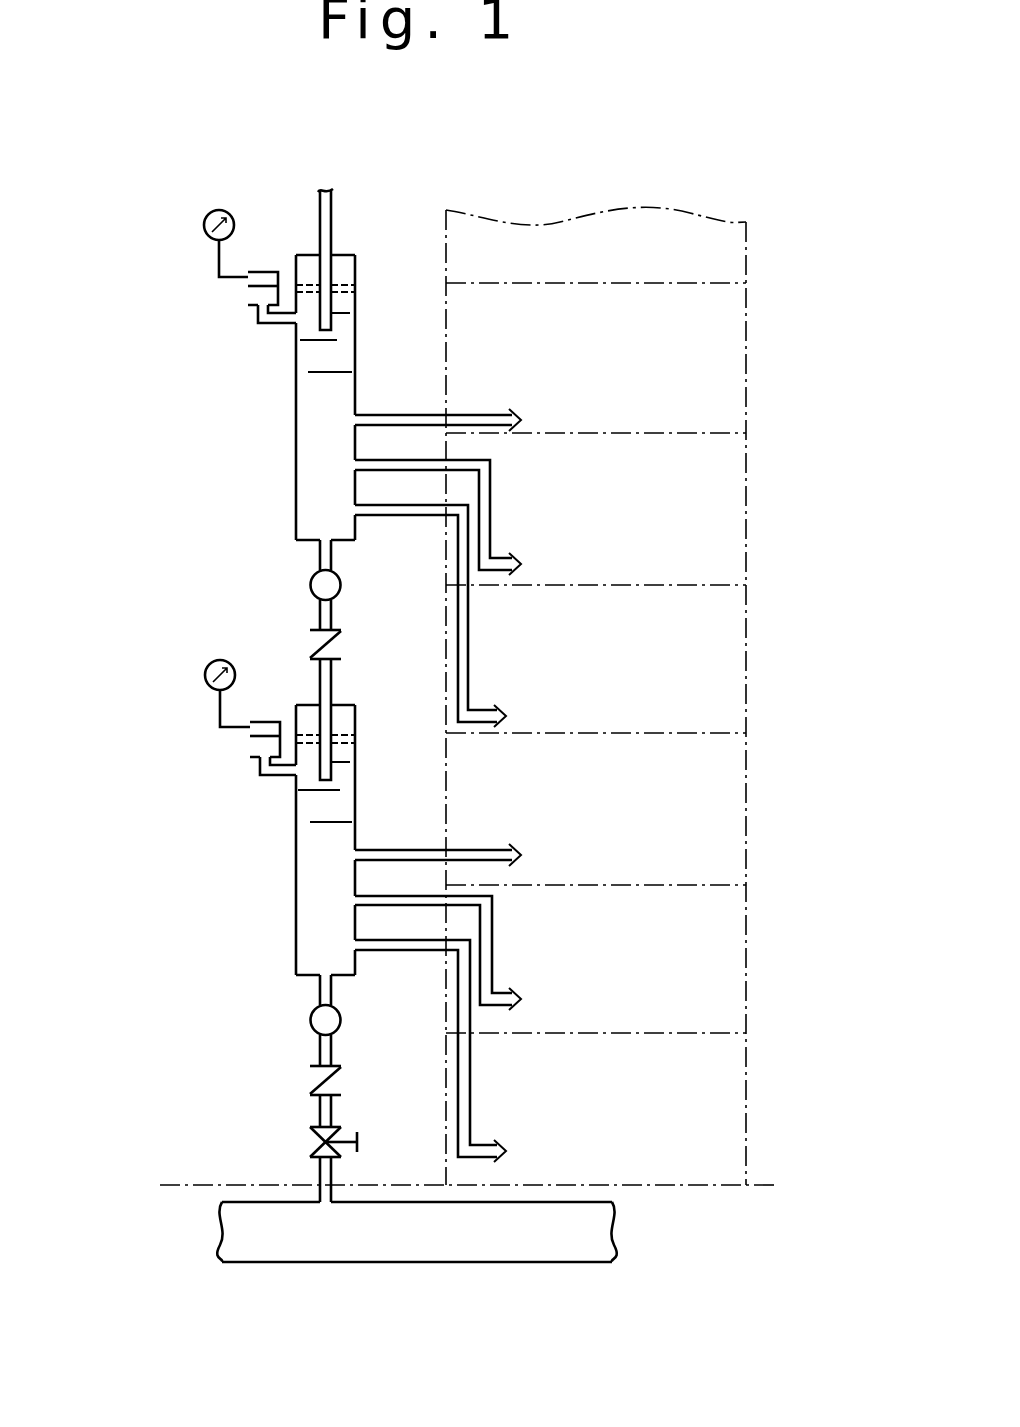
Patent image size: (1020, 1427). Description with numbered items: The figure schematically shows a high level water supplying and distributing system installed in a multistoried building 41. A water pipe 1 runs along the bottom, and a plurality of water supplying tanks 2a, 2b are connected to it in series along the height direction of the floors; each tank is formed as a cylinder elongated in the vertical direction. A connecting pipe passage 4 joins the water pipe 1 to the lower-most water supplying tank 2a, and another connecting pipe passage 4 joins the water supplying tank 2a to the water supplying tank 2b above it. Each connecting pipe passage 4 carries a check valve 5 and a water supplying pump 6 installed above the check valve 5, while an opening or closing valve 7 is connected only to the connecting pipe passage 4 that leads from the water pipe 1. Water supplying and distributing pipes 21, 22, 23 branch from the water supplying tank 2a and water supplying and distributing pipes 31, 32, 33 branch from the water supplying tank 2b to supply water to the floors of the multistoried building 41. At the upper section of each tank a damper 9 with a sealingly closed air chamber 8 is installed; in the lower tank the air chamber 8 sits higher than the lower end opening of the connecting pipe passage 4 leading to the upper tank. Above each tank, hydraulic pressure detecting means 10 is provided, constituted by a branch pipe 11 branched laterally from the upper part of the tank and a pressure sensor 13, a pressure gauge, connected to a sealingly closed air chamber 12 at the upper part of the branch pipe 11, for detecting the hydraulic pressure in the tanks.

The water pipe 1 is at (571, 1198).
The water supplying tank 2a is at (305, 884).
The water supplying tank 2b is at (296, 437).
The connecting pipe passage 4 is at (331, 215).
The check valve 5 is at (338, 632).
The water supplying pump 6 is at (341, 578).
The opening or closing valve 7 is at (313, 1130).
The air chamber 8 is at (347, 270).
The damper 9 is at (352, 313).
The hydraulic pressure detecting means 10 is at (210, 287).
The branch pipe 11 is at (248, 300).
The air chamber 12 is at (266, 272).
The pressure sensor 13 is at (219, 210).
The water supplying and distributing pipe 21 is at (471, 1080).
The water supplying and distributing pipe 22 is at (494, 935).
The water supplying and distributing pipe 23 is at (485, 848).
The water supplying and distributing pipe 31 is at (470, 650).
The water supplying and distributing pipe 32 is at (492, 478).
The water supplying and distributing pipe 33 is at (490, 410).
The multistoried building 41 is at (746, 355).